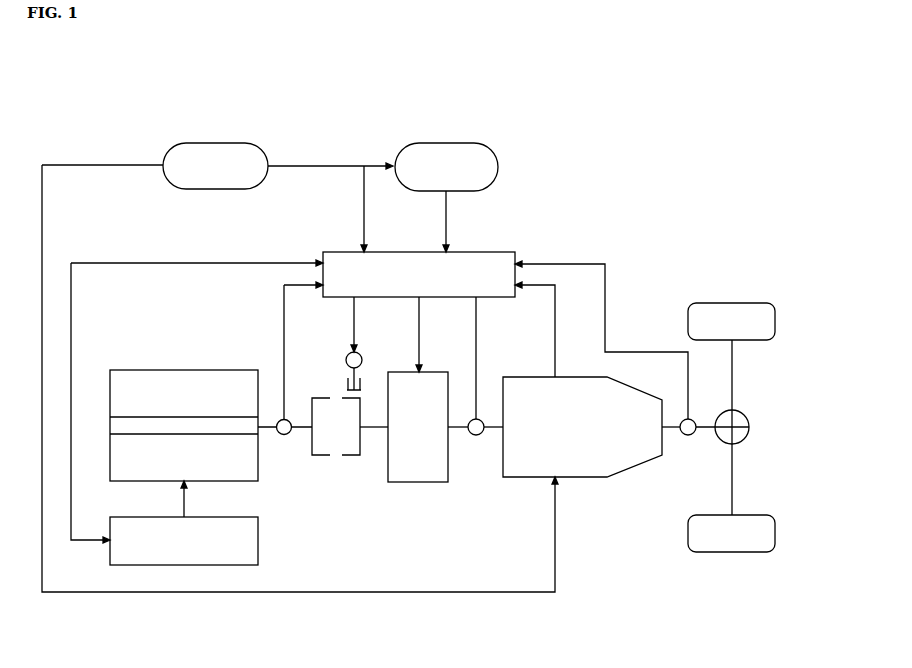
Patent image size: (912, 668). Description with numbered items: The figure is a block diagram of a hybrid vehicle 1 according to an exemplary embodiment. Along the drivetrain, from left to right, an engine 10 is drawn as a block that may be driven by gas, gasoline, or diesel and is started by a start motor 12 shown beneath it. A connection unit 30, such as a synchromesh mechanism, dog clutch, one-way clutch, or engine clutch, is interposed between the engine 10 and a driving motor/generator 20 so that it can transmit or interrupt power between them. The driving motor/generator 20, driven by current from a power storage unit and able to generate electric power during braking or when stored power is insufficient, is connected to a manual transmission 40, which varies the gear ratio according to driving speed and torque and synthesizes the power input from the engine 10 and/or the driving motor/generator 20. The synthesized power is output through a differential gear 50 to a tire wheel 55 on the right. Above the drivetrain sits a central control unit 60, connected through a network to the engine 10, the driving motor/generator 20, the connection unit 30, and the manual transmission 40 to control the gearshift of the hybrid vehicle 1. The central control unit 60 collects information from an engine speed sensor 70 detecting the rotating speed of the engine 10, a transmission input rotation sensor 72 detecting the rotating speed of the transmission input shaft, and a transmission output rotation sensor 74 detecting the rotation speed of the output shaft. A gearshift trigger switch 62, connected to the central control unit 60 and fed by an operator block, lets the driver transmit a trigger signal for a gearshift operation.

The hybrid vehicle 1 is at (410, 72).
The engine 10 is at (184, 370).
The start motor 12 is at (258, 540).
The driving motor/generator 20 is at (417, 482).
The connection unit 30 is at (337, 461).
The manual transmission 40 is at (598, 477).
The drive axle / differential 50 is at (749, 427).
The tire wheel 55 is at (775, 318).
The central control unit 60 is at (500, 252).
The gearshift trigger switch 62 is at (498, 166).
The engine speed sensor 70 is at (284, 435).
The transmission input rotation sensor 72 is at (476, 435).
The transmission output rotation sensor 74 is at (688, 435).